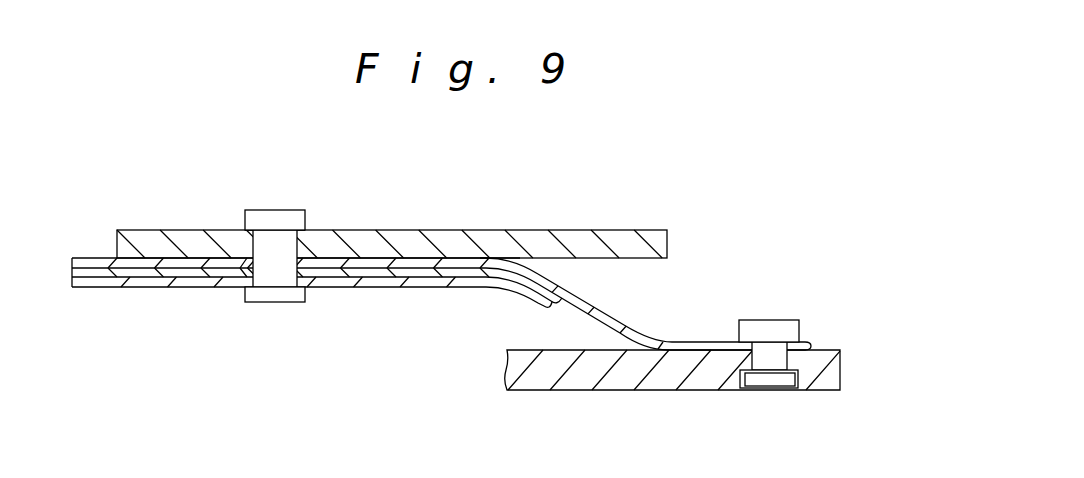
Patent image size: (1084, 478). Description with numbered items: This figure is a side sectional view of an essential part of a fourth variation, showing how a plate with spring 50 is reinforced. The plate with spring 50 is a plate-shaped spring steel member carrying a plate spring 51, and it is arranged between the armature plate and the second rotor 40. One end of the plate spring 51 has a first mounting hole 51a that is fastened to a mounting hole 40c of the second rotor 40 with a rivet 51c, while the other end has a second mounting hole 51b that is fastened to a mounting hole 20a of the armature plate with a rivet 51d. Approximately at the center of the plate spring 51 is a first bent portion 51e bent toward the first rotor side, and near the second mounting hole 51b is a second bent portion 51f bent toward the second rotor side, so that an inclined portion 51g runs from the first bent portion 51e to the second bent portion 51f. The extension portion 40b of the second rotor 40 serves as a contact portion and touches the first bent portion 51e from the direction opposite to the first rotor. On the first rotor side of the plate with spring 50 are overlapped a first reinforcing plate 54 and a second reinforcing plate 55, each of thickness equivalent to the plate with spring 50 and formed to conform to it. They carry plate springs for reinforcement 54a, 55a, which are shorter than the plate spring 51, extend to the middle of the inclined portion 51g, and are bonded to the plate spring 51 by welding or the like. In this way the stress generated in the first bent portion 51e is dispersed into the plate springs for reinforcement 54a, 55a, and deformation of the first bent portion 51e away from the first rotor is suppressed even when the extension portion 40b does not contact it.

The second rotor 40 is at (440, 230).
The extension portion 40b is at (497, 248).
The mounting hole 20a is at (252, 258).
The plate with spring 50 is at (90, 258).
The plate spring 51 is at (382, 262).
The first bent portion 51e is at (484, 280).
The inclined portion 51g is at (595, 310).
The second bent portion 51f is at (662, 345).
The first mounting hole 51a is at (240, 268).
The first reinforcing plate 54 is at (92, 273).
The plate spring for reinforcement 54a is at (560, 303).
The second reinforcing plate 55 is at (137, 283).
The plate spring for reinforcement 55a is at (538, 303).
The second mounting hole 51b is at (803, 341).
The mounting hole 40c is at (748, 355).
The rivet 51c is at (263, 220).
The rivet 51d is at (772, 330).